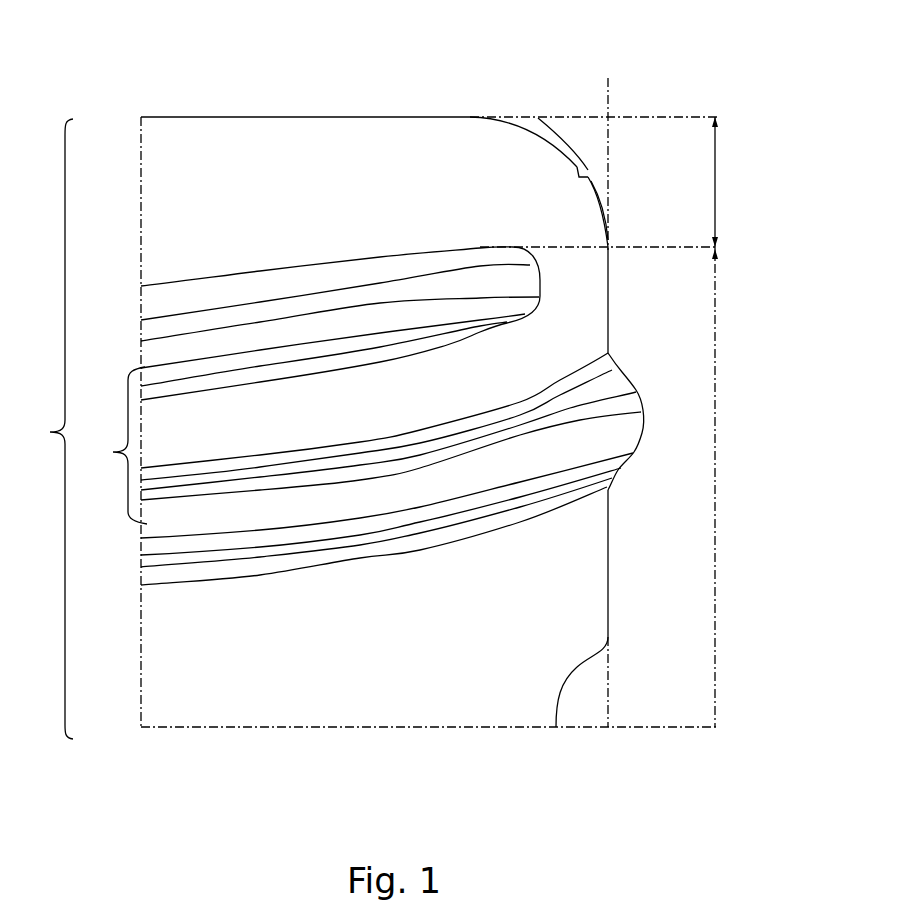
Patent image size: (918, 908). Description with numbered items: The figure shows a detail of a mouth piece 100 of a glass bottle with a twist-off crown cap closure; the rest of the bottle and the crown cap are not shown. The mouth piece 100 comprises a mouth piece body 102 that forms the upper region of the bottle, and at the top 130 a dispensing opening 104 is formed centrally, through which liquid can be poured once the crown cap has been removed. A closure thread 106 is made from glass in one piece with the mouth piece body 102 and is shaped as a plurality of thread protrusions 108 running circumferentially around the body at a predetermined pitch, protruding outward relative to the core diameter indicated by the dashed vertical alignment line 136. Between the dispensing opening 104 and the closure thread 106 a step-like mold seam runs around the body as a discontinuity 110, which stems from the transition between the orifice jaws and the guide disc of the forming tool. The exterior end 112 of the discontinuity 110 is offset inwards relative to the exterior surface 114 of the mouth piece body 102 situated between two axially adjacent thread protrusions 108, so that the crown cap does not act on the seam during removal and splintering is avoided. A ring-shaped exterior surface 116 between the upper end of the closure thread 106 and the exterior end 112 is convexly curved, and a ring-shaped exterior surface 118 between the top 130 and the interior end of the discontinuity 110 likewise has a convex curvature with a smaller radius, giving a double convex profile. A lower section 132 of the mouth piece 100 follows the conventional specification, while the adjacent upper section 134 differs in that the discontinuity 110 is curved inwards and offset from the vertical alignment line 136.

The mouth piece 100 is at (188, 64).
The mouth piece body 102 is at (42, 429).
The dispensing opening 104 is at (302, 110).
The closure thread 106 is at (107, 445).
The thread protrusions 108 is at (540, 298).
The discontinuity 110 is at (590, 158).
The exterior end of the discontinuity 112 is at (590, 173).
The exterior surface 114 is at (610, 353).
The ring-shaped exterior surface 116 is at (605, 198).
The ring-shaped exterior surface 118 is at (564, 143).
The top 130 is at (220, 116).
The lower section 132 is at (715, 512).
The upper section 134 is at (716, 187).
The vertical alignment line 136 is at (608, 88).